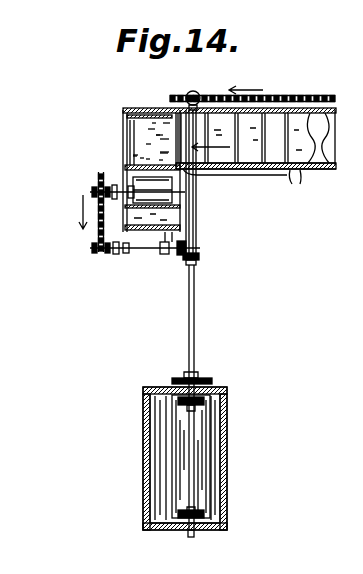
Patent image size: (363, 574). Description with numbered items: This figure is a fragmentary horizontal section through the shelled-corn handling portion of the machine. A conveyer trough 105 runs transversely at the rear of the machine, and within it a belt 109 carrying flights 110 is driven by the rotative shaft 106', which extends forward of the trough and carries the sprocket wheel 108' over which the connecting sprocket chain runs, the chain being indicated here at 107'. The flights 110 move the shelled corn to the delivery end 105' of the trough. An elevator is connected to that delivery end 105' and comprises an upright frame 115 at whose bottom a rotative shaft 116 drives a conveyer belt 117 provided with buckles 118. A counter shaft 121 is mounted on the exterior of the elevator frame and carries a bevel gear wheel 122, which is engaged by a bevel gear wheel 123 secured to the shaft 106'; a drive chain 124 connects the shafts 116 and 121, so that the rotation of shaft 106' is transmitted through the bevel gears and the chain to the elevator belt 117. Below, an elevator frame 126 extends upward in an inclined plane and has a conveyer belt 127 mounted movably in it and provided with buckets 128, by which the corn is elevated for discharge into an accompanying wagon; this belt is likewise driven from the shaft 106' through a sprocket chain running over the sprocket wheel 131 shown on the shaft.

The delivery end of the trough 105' is at (227, 155).
The rotative shaft 106' is at (212, 296).
The sprocket wheel 108' is at (252, 82).
The frame 107' is at (256, 115).
The conveyer trough 105 is at (256, 183).
The belt 109 is at (308, 170).
The flights 110 is at (295, 170).
The rotative shaft 116 is at (138, 120).
The conveyer belt 117 is at (137, 141).
The buckles 118 is at (171, 207).
The drive chain 124 is at (94, 232).
The counter shaft 121 is at (158, 252).
The upright frame 115 is at (145, 255).
The bevel gear wheel 122 is at (180, 253).
The bevel gear wheel 123 is at (200, 257).
The sprocket wheel 131 is at (176, 379).
The elevator frame 126 is at (145, 443).
The conveyer belt 127 is at (173, 468).
The buckets 128 is at (167, 493).